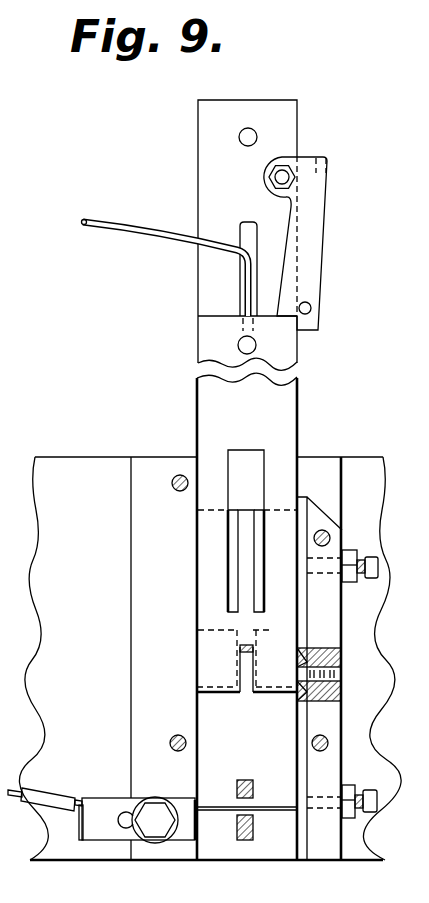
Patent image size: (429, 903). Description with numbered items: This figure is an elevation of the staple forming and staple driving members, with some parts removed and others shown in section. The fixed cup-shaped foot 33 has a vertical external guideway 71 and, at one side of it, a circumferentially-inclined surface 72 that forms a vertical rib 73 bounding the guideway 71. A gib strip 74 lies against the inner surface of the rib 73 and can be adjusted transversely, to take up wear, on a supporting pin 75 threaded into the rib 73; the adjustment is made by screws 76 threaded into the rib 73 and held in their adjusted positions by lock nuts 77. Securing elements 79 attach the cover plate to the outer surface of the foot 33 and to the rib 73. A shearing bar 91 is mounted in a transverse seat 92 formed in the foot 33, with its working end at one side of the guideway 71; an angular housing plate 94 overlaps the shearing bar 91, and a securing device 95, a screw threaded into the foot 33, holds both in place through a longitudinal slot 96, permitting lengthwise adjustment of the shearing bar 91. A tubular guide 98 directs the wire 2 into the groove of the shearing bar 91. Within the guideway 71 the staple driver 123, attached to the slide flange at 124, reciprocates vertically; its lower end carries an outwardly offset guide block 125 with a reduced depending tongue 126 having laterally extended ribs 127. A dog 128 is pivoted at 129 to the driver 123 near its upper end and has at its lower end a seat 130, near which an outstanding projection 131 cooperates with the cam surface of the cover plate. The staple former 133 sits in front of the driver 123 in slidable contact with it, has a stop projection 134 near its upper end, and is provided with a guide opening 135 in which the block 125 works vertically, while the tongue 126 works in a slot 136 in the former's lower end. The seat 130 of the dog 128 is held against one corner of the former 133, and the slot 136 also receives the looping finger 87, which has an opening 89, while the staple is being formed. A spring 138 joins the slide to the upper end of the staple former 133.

The wire 2 is at (13, 790).
The cup-shaped foot 33 is at (55, 470).
The vertical external guideway 71 is at (272, 848).
The circumferentially-inclined surface 72 is at (370, 733).
The vertical rib 73 is at (327, 604).
The gib strip 74 is at (296, 720).
The supporting pin 75 is at (341, 655).
The screws 76 is at (366, 558).
The lock nuts 77 is at (349, 551).
The securing elements 79 is at (176, 490).
The looping finger 87 is at (249, 786).
The opening 89 is at (251, 811).
The shearing bar 91 is at (81, 822).
The transverse seat 92 is at (180, 792).
The angular housing plate 94 is at (98, 806).
The securing device 95 is at (157, 826).
The slot 96 is at (125, 830).
The tubular guide 98 is at (41, 800).
The staple driver 123 is at (208, 165).
The attachment point 124 is at (239, 136).
The guide block 125 is at (248, 465).
The depending tongue 126 is at (243, 547).
The ribs 127 is at (270, 645).
The dog 128 is at (315, 233).
The pivot 129 is at (287, 172).
The seat 130 is at (293, 312).
The outstanding projection 131 is at (312, 308).
The staple former 133 is at (283, 345).
The stop projection 134 is at (238, 345).
The guide opening 135 is at (232, 448).
The slot 136 is at (246, 662).
The spring 138 is at (128, 239).